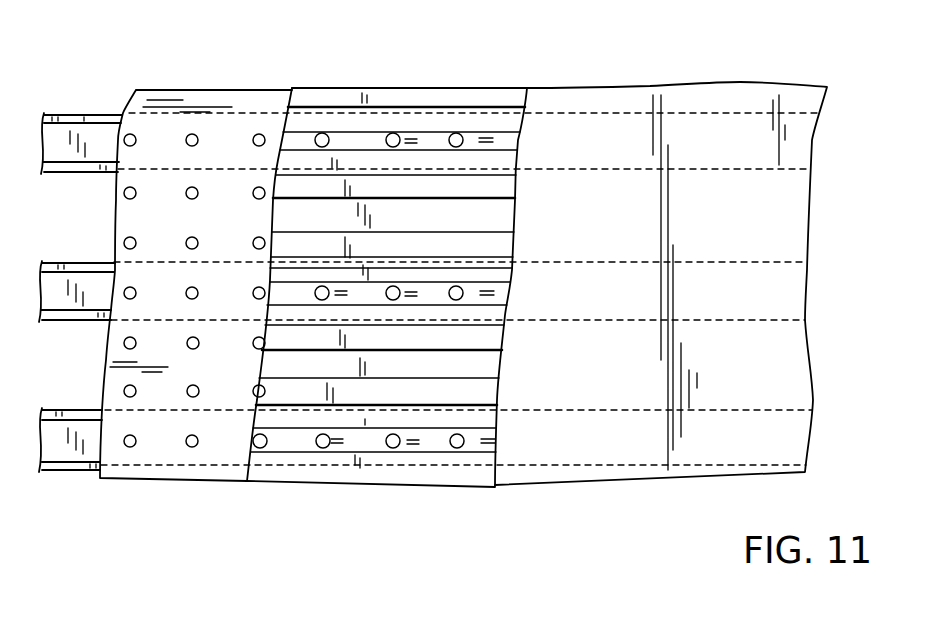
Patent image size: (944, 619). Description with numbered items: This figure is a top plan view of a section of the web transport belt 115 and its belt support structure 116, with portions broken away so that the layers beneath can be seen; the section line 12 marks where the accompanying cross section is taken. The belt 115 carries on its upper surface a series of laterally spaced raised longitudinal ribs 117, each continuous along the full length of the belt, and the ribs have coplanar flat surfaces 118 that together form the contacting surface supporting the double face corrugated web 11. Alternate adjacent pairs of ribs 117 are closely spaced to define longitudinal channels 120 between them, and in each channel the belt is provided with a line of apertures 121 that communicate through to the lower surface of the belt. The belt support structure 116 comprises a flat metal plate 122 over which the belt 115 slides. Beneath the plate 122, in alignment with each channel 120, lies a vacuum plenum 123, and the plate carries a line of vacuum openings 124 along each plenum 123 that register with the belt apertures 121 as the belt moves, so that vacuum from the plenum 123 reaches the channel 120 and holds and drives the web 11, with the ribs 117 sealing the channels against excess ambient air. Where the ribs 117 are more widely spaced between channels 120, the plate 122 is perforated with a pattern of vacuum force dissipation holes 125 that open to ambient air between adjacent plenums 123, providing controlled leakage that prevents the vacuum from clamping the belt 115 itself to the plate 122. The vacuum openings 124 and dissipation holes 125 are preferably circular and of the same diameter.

The double face corrugated web 11 is at (752, 90).
The section line 12- 12 is at (393, 535).
The web transport belt 115 is at (326, 488).
The belt support structure 116 is at (214, 481).
The raised longitudinal ribs 117 is at (503, 158).
The flat surfaces 118 is at (290, 273).
The longitudinal channels 120 is at (347, 137).
The apertures 121 is at (391, 286).
The flat metal plate 122 is at (245, 98).
The vacuum plenum 123 is at (98, 118).
The vacuum openings 124 is at (191, 134).
The vacuum force dissipation holes 125 is at (124, 242).